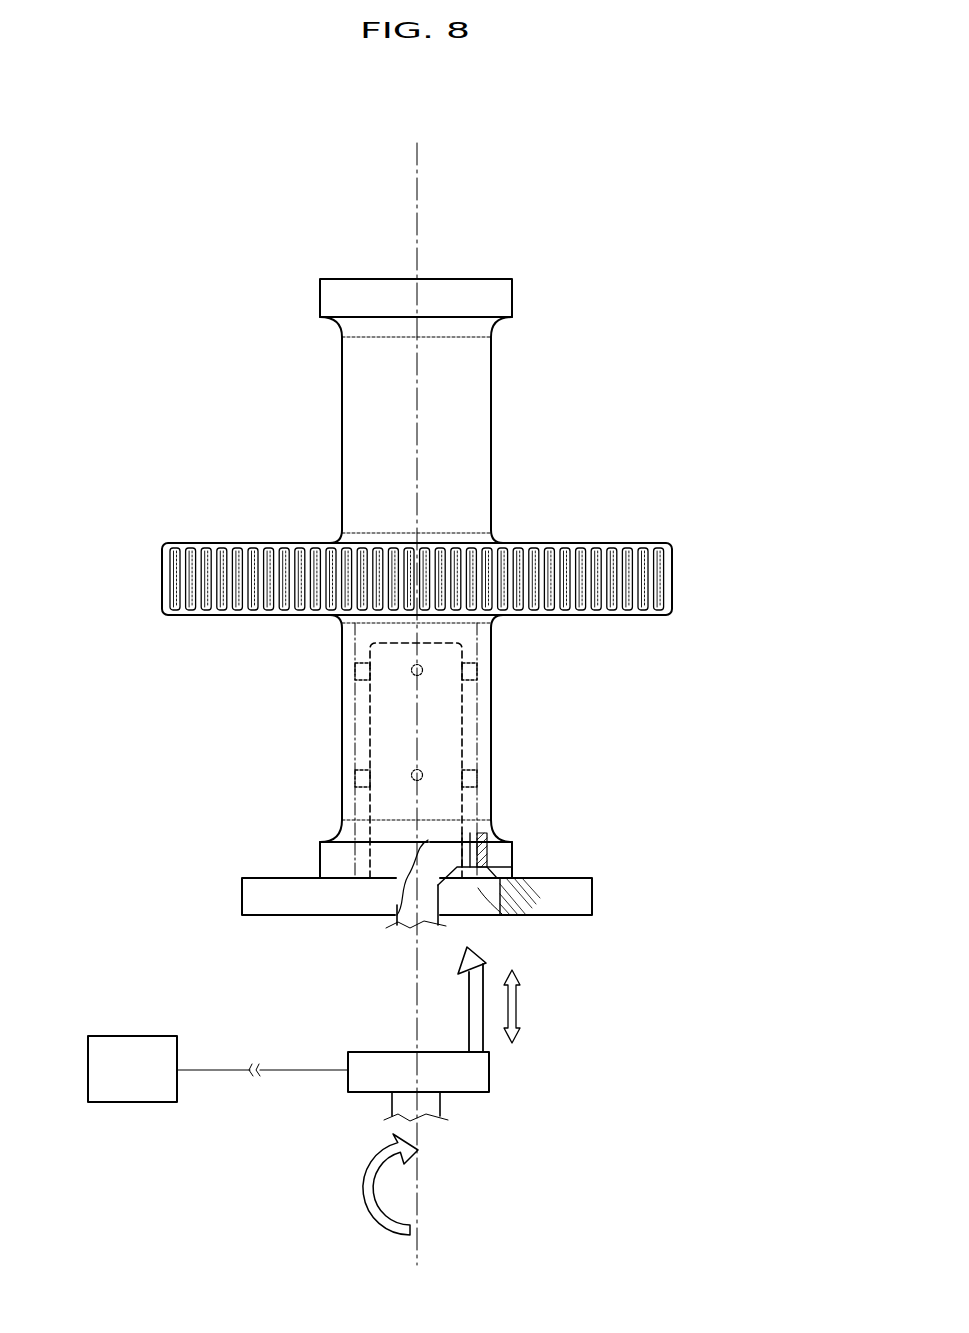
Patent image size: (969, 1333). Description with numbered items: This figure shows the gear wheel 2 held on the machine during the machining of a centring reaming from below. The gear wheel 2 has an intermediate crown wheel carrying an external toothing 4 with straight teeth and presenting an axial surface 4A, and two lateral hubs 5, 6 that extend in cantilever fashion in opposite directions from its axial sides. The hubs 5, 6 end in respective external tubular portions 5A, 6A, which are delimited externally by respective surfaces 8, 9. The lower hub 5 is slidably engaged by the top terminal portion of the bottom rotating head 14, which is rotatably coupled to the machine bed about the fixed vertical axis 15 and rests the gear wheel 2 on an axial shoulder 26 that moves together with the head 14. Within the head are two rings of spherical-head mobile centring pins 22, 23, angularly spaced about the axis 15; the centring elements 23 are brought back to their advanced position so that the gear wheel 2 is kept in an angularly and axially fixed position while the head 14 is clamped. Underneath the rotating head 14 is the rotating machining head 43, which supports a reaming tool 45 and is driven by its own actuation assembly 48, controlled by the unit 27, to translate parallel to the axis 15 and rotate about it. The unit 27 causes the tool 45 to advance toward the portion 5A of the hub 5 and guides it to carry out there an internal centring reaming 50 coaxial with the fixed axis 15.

The gear wheel 2 is at (467, 543).
The external toothing 4 is at (690, 588).
The axial surface 4A is at (617, 545).
The hub 5 is at (345, 712).
The external tubular portion 5A is at (475, 860).
The hub 6 is at (355, 396).
The external tubular portion 6A is at (514, 318).
The surface 8 is at (515, 845).
The surface 9 is at (515, 291).
The bottom rotating head 14 is at (388, 888).
The fixed vertical axis 15 is at (417, 160).
The mobile centring pins 22 is at (410, 782).
The mobile centring pins 23 is at (421, 674).
The axial shoulder 26 is at (568, 876).
The unit 27 is at (145, 1090).
The rotating machining head 43 is at (510, 1078).
The reaming tool 45 is at (490, 952).
The actuation assembly 48 is at (432, 1130).
The internal centring reaming 50 is at (478, 884).